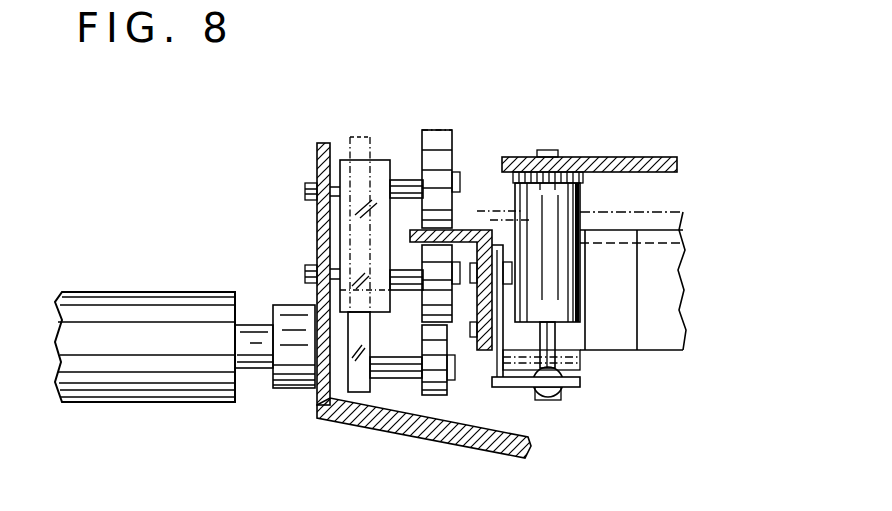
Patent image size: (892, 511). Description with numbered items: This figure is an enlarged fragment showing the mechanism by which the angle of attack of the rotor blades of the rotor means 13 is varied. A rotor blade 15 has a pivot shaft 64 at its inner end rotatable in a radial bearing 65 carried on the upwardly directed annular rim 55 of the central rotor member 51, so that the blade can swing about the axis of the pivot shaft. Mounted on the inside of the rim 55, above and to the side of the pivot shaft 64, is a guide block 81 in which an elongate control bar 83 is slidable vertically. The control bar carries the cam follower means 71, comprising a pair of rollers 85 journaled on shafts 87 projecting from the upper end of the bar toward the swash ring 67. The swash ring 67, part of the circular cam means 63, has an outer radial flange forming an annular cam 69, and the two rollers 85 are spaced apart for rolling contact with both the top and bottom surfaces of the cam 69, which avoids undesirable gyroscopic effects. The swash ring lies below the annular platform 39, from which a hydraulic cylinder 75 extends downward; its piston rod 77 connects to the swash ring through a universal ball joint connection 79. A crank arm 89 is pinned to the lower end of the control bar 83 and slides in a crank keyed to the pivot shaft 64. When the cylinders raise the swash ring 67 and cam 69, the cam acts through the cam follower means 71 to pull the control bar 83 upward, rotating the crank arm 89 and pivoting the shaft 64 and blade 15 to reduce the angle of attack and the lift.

The rotor means 13 is at (133, 228).
The rotor blade 15 is at (150, 368).
The annular platform 39 is at (640, 152).
The central rotor member 51 is at (400, 428).
The annular rim 55 is at (318, 240).
The circular cam means 63 is at (482, 168).
The pivot shaft 64 is at (247, 325).
The radial bearing 65 is at (294, 382).
The swash ring 67 is at (652, 277).
The annular cam 69 is at (477, 212).
The cam follower means 71 is at (386, 120).
The hydraulic cylinder 75 is at (580, 307).
The piston rod 77 is at (558, 342).
The universal ball joint connection 79 is at (562, 394).
The guide block 81 is at (323, 163).
The control bar 83 is at (357, 332).
The roller 85 is at (496, 125).
The shaft 87 is at (411, 180).
The crank arm 89 is at (432, 388).